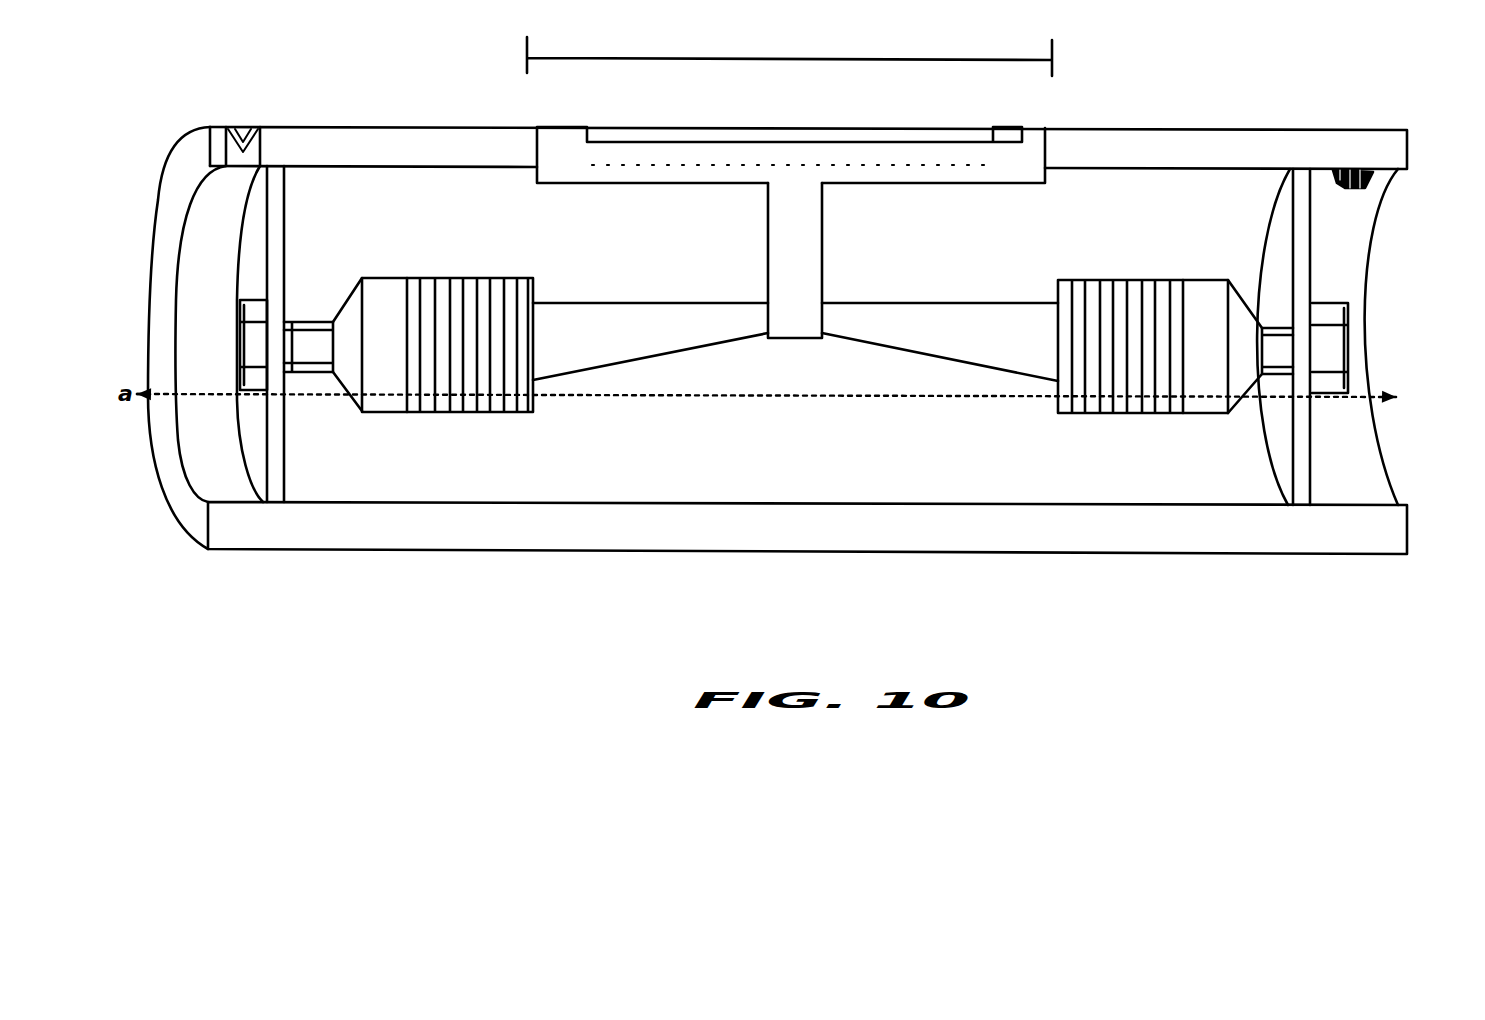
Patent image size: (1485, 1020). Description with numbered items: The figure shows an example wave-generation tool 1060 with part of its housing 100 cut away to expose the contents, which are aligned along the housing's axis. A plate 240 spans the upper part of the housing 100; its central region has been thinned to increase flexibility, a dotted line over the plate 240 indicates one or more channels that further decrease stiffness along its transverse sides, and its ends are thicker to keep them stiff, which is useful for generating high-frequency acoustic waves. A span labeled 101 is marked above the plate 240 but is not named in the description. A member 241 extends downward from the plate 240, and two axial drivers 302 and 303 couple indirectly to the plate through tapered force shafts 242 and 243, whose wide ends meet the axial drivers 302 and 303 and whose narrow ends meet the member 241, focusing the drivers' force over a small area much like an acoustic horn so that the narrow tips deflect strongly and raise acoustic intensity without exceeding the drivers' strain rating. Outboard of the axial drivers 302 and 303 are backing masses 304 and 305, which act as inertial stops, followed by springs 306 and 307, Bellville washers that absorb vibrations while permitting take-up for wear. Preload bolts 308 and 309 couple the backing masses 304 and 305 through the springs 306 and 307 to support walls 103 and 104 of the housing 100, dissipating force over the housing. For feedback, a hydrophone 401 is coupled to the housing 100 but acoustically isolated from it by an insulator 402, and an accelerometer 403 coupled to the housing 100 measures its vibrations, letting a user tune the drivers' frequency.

The housing 100 is at (1198, 130).
The housing section 101 is at (789, 49).
The support wall 103 is at (281, 461).
The support wall 104 is at (1297, 432).
The plate 240 is at (738, 148).
The member 241 is at (821, 233).
The tapered force shaft 242 is at (610, 342).
The tapered force shaft 243 is at (940, 344).
The axial driver 302 is at (452, 408).
The axial driver 303 is at (1118, 403).
The backing mass 304 is at (385, 396).
The backing mass 305 is at (1195, 406).
The spring 306 is at (346, 380).
The spring 307 is at (1243, 378).
The preload bolt 308 is at (309, 321).
The preload bolt 309 is at (1276, 327).
The hydrophone 401 is at (243, 128).
The insulator 402 is at (266, 140).
The accelerometer 403 is at (1373, 190).
The wave-generation tool 1060 is at (365, 575).